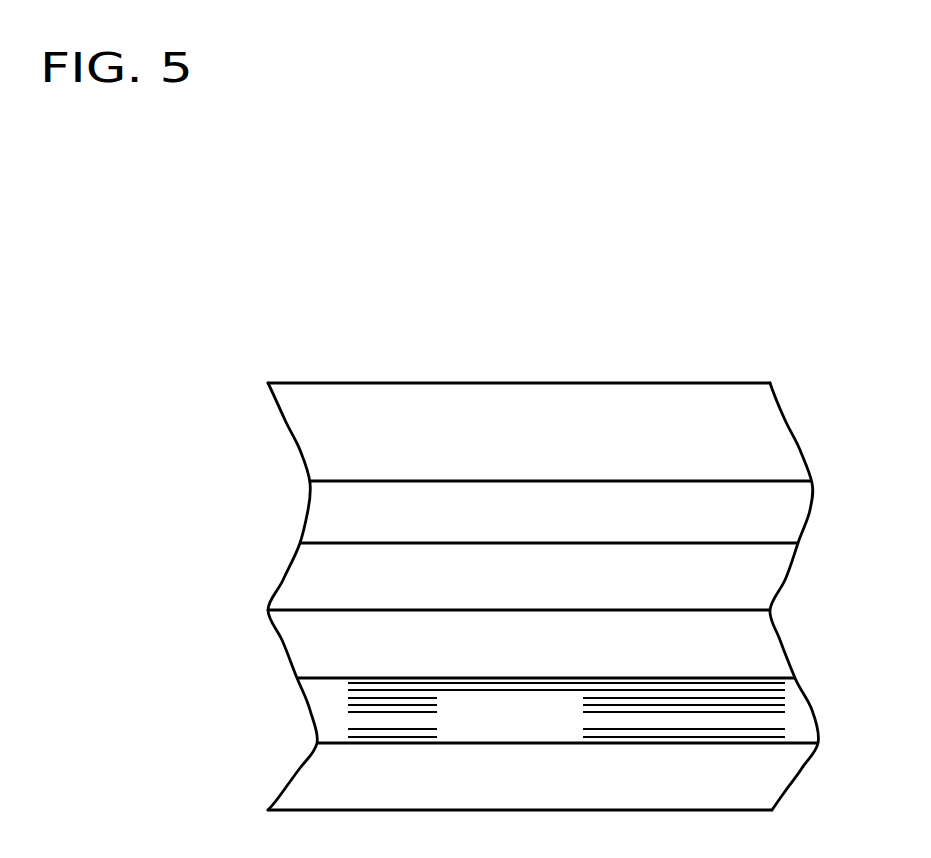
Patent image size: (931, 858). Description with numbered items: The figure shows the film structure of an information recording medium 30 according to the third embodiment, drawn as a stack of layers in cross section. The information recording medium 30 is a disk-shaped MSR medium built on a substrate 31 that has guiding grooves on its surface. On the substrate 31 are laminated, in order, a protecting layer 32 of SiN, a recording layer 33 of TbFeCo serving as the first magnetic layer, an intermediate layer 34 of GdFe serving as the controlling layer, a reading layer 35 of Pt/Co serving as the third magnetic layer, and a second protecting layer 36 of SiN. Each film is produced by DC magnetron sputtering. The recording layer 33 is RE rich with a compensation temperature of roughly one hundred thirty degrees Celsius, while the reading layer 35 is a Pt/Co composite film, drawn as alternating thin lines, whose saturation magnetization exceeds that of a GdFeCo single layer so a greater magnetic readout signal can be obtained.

The information recording medium 30 is at (680, 355).
The substrate 31 is at (330, 453).
The protecting layer 32 is at (325, 524).
The recording layer 33 is at (293, 583).
The intermediate layer 34 is at (308, 652).
The reading layer 35 is at (263, 678).
The protecting layer 36 is at (317, 788).